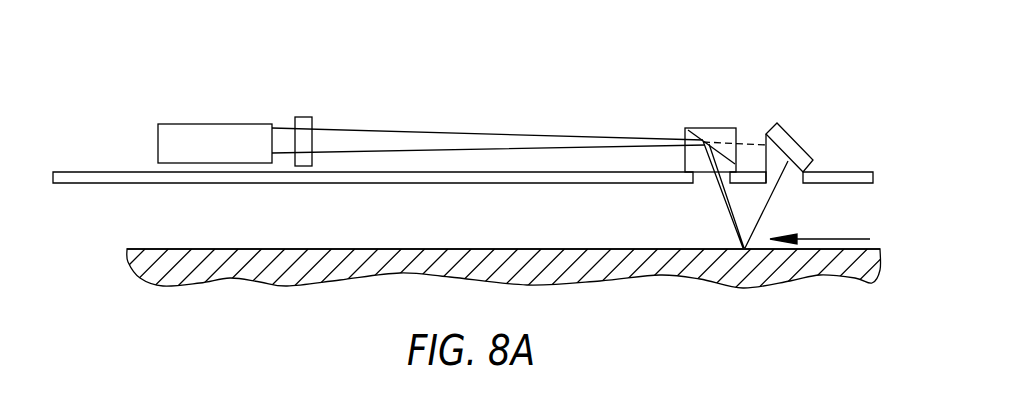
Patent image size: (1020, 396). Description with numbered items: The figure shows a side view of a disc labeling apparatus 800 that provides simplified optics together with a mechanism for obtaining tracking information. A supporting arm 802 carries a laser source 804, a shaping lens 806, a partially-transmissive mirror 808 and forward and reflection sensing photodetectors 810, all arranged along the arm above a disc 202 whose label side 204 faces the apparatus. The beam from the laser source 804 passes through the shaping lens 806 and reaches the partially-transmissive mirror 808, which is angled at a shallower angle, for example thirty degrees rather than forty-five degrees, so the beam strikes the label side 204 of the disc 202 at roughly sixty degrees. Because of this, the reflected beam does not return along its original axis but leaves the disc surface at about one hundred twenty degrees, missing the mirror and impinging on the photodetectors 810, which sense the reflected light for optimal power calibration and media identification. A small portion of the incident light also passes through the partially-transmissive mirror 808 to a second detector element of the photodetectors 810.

The disc labeling apparatus 800 is at (212, 37).
The supporting arm 802 is at (91, 171).
The laser source 804 is at (215, 124).
The shaping lens 806 is at (307, 116).
The partially-transmissive mirror 808 is at (710, 118).
The forward and reflection sensing photodetectors 810 is at (800, 128).
The label side 204 is at (493, 248).
The disc 202 is at (545, 266).